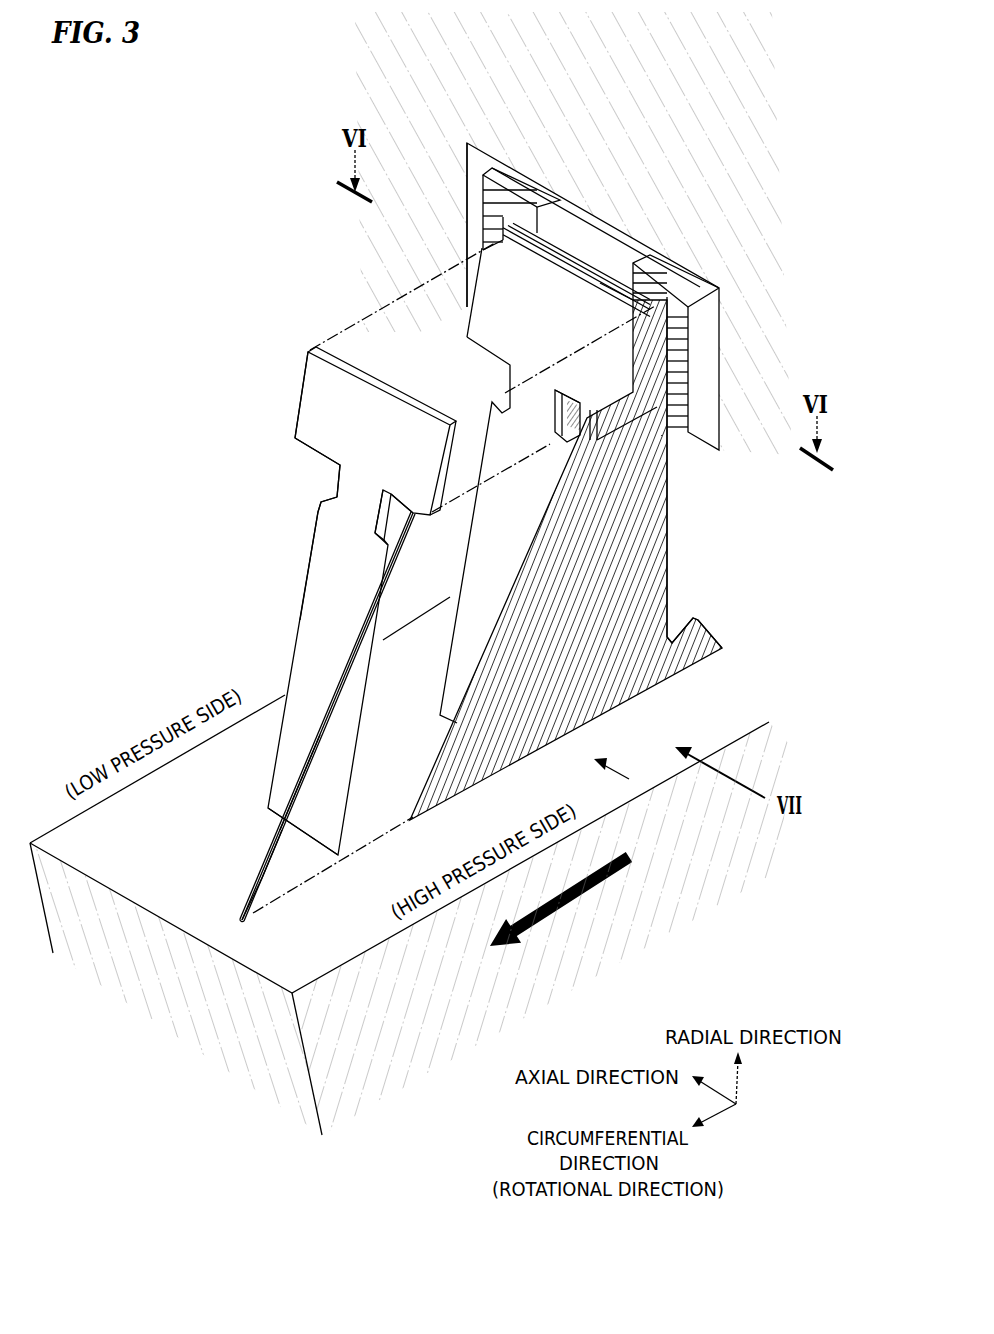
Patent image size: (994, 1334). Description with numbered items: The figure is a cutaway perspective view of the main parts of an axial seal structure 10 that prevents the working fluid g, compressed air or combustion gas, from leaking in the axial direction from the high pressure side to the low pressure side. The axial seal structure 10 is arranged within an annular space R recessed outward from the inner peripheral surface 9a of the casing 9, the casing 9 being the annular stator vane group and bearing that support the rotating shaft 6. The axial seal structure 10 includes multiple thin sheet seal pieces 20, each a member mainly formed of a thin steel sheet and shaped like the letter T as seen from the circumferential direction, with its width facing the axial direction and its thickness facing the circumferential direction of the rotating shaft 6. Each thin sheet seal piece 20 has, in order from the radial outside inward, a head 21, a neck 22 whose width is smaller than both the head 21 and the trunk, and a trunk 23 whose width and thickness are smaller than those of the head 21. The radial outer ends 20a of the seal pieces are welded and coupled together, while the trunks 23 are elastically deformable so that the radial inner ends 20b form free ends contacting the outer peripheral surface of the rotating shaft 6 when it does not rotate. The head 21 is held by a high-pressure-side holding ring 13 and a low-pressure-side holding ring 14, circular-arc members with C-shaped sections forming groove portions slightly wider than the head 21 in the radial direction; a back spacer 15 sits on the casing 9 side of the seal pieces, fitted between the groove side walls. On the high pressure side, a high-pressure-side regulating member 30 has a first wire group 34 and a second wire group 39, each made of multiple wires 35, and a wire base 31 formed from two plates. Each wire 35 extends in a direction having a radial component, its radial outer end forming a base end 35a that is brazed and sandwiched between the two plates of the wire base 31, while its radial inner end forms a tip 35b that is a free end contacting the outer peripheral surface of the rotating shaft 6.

The casing 9 is at (370, 82).
The low-pressure-side holding ring 14 is at (517, 187).
The back spacer 15 is at (585, 245).
The annular space R is at (620, 243).
The high-pressure-side holding ring 13 is at (673, 273).
The axial seal structure 10 is at (730, 326).
The radial outer ends of the thin sheet seal pieces 20a is at (343, 363).
The head 21 is at (322, 411).
The neck 22 is at (347, 488).
The trunk 23 is at (330, 543).
The thin sheet seal piece 20 is at (180, 405).
The base end 35a is at (413, 510).
The wire base 31 is at (567, 408).
The high-pressure-side regulating member 30 is at (292, 757).
The rotating shaft 6 is at (64, 836).
The radial inner ends of the thin sheet seal pieces 20b is at (272, 822).
The second wire group 39 is at (270, 842).
The first wire group 34 is at (275, 865).
The wire 35 is at (564, 739).
The tip 35b is at (243, 921).
The working fluid g is at (629, 779).
The inner peripheral surface of the casing 9a is at (742, 652).